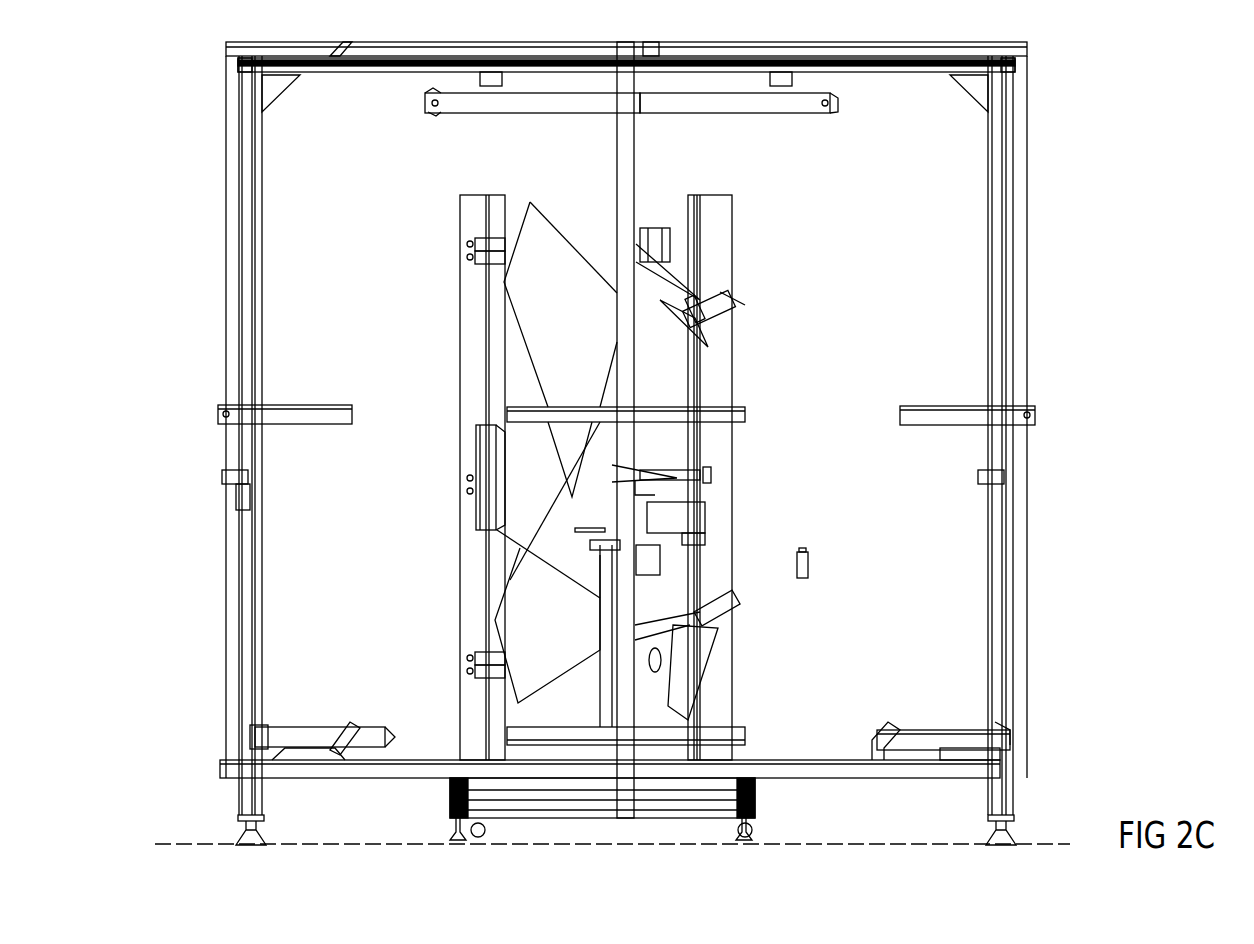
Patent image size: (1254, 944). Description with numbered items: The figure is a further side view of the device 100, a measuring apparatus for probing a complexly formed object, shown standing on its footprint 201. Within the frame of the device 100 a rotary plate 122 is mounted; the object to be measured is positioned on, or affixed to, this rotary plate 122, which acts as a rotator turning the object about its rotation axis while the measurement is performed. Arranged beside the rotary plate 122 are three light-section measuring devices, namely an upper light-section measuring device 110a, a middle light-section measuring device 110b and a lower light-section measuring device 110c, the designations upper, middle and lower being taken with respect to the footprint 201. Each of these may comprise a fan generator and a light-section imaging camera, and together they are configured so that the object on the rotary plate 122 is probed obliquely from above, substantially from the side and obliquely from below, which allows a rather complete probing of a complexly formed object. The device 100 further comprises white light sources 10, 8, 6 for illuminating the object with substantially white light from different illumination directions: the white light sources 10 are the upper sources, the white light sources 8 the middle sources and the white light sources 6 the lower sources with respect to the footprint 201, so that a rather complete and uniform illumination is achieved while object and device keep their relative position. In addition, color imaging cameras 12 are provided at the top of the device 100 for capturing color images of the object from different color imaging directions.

The device 100 is at (160, 73).
The footprint 201 is at (178, 844).
The white light sources 10 is at (685, 114).
The color imaging cameras 12 is at (838, 114).
The white light sources 8 is at (925, 395).
The white light sources 6 is at (925, 710).
The upper light-section measuring device 110a is at (738, 278).
The middle light-section measuring device 110b is at (738, 467).
The lower light-section measuring device 110c is at (738, 623).
The rotary plate 122 is at (592, 532).